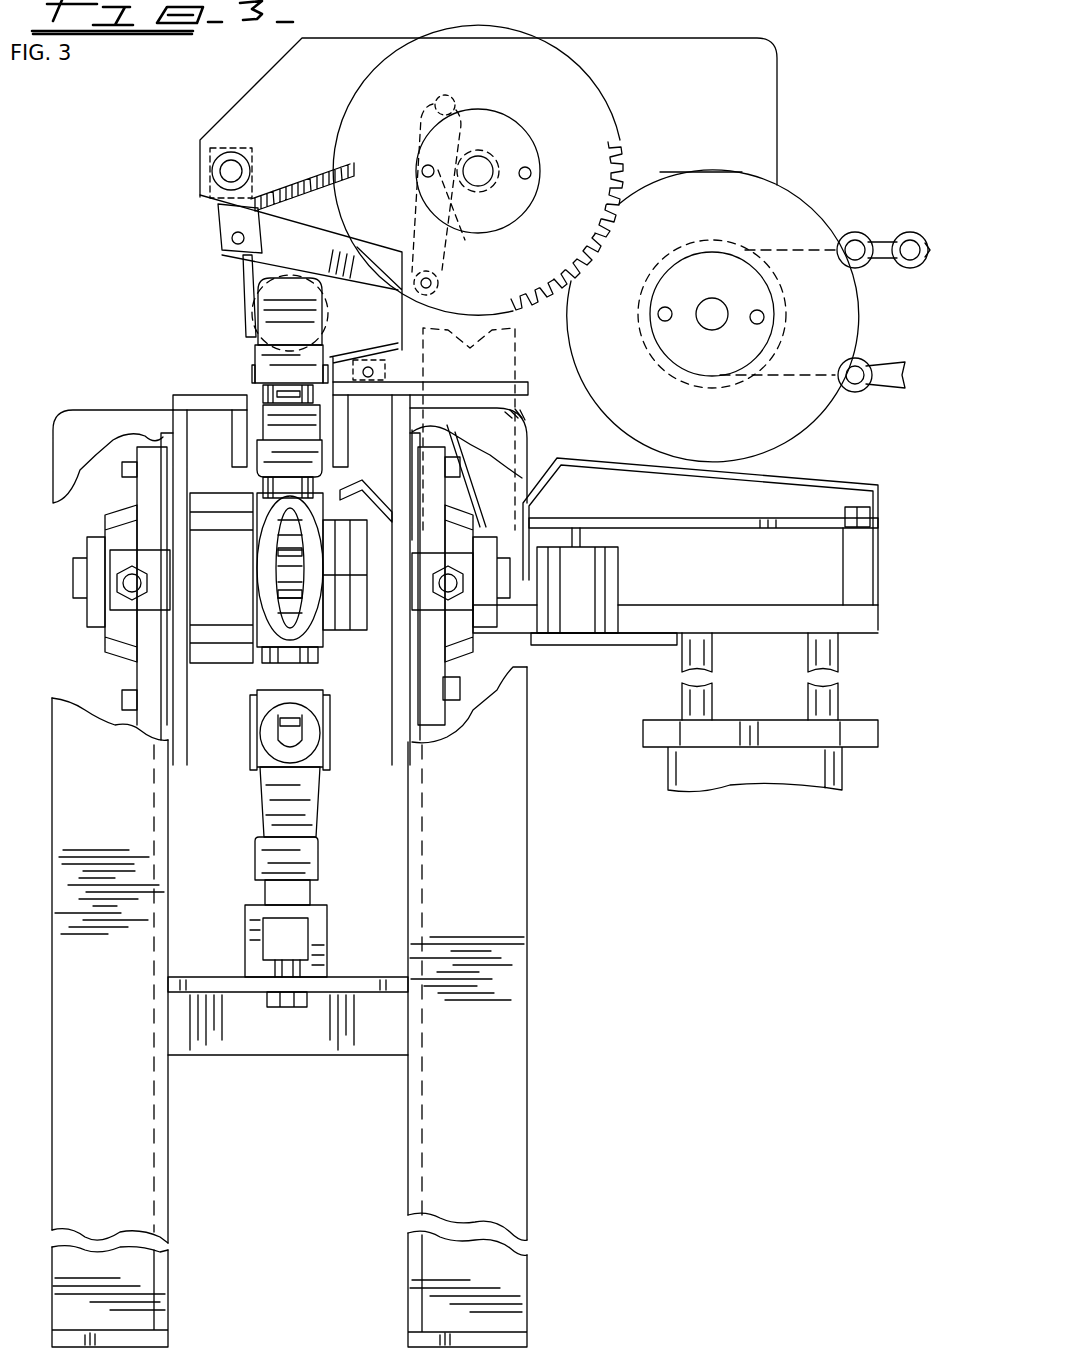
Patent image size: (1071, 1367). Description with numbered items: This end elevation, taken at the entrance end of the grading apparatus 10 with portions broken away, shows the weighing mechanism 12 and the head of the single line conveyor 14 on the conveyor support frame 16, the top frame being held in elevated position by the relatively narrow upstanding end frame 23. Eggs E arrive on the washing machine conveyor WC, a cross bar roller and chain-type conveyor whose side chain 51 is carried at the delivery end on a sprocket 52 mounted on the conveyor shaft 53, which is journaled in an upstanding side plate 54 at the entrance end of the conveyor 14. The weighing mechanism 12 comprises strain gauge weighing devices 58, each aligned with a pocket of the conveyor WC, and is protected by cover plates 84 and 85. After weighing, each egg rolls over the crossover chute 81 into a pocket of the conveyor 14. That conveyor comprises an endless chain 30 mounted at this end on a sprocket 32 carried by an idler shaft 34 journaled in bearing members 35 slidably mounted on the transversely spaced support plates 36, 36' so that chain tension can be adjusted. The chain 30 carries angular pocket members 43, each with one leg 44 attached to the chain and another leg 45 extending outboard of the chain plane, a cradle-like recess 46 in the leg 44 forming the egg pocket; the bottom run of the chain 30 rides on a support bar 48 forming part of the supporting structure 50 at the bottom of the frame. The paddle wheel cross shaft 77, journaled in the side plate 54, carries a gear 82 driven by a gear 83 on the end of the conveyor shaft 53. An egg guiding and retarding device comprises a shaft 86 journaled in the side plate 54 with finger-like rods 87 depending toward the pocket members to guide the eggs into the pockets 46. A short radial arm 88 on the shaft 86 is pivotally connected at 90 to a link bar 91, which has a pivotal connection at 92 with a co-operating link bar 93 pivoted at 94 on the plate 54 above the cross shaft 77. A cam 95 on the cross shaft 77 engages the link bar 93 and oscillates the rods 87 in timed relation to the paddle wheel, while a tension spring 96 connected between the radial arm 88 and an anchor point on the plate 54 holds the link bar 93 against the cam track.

The grading apparatus 10 is at (150, 385).
The weighing mechanism 12 is at (545, 652).
The single line conveyor 14 is at (246, 365).
The conveyor support frame 16 is at (530, 906).
The end frame 23 is at (526, 1004).
The endless chain 30 is at (264, 486).
The sprocket 32 is at (285, 600).
The idler shaft 34 is at (354, 620).
The bearing members 35 is at (122, 520).
The support plate 36 is at (198, 666).
The support plate 36' is at (460, 586).
The pocket members 43 is at (330, 733).
The leg 44 is at (262, 580).
The leg 45 is at (250, 676).
The cradle-like recess 46 is at (270, 566).
The support bar 48 is at (310, 893).
The supporting structure 50 is at (318, 928).
The side chain 51 is at (805, 312).
The sprocket 52 is at (792, 295).
The conveyor shaft 53 is at (714, 311).
The side plate 54 is at (712, 48).
The strain gauge weighing devices 58 is at (690, 530).
The cross shaft 77 is at (488, 163).
The crossover chute 81 is at (378, 343).
The gear 82 is at (556, 78).
The gear 83 is at (723, 180).
The cover plate 84 is at (770, 480).
The cover plate 85 is at (362, 490).
The shaft 86 is at (220, 172).
The rods 87 is at (240, 292).
The radial arm 88 is at (220, 232).
The pivotal connection 90 is at (235, 244).
The link bar 91 is at (302, 262).
The pivotal connection 92 is at (439, 284).
The link bar 93 is at (465, 243).
The pivot 94 is at (437, 98).
The cam 95 is at (494, 152).
The tension spring 96 is at (316, 165).
The eggs E is at (322, 303).
The washing machine conveyor WC is at (910, 222).